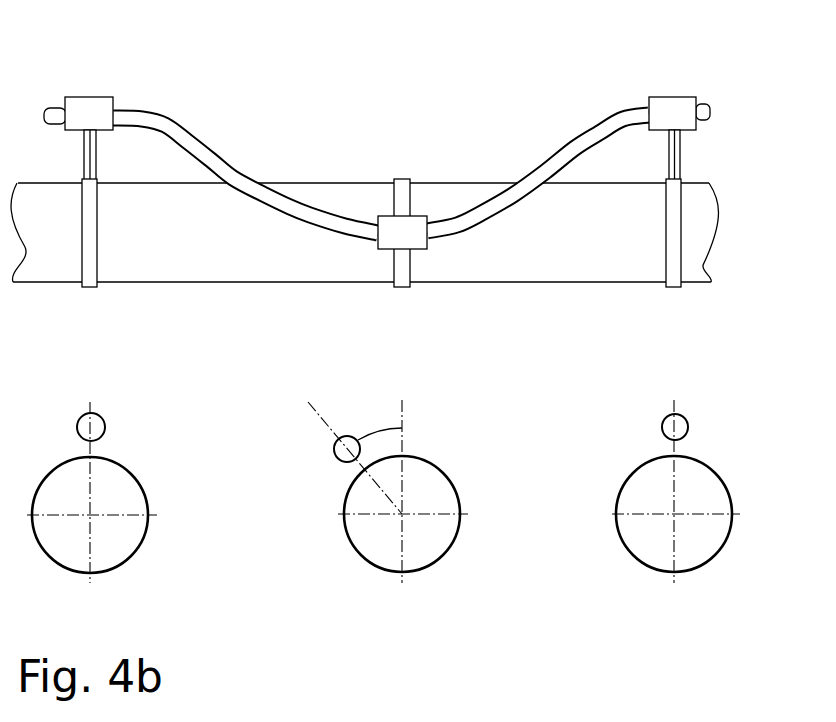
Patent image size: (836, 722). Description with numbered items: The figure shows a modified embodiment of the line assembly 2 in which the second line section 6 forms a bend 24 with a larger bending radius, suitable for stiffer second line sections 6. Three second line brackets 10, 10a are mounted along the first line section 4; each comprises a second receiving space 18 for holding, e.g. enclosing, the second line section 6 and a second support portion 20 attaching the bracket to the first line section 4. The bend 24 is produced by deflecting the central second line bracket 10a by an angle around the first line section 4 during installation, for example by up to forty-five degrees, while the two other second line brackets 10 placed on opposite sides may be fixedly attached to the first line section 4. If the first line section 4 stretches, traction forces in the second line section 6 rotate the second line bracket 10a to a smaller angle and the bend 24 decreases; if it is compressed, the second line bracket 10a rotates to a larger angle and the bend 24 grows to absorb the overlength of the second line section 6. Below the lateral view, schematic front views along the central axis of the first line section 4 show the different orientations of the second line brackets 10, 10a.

The arrangement 2 is at (310, 130).
The first line section 4 is at (47, 267).
The second line section 6 is at (497, 207).
The second line bracket 10 is at (107, 153).
The second line bracket 10a is at (420, 262).
The second receiving space 18 is at (92, 108).
The second support portion 20 is at (90, 272).
The bend 24 is at (352, 258).